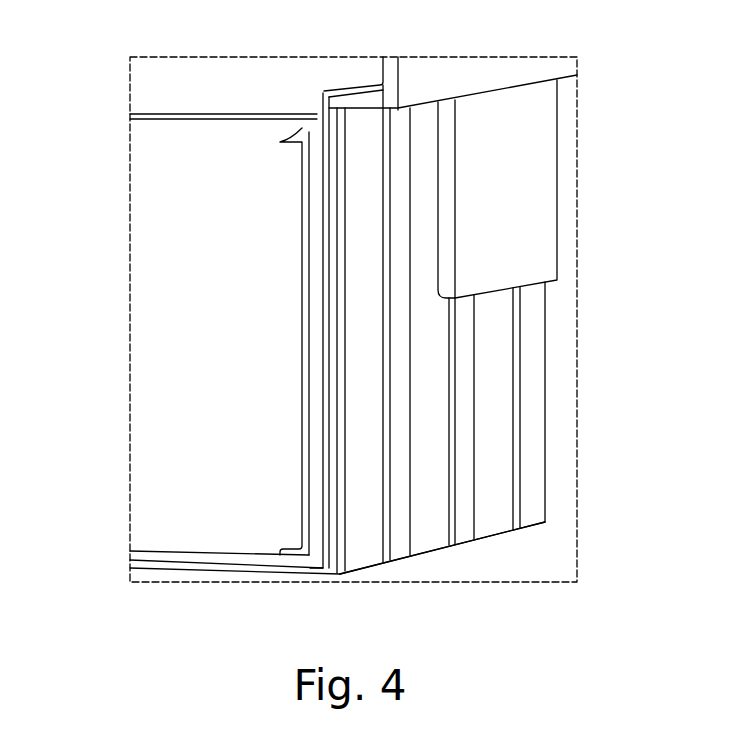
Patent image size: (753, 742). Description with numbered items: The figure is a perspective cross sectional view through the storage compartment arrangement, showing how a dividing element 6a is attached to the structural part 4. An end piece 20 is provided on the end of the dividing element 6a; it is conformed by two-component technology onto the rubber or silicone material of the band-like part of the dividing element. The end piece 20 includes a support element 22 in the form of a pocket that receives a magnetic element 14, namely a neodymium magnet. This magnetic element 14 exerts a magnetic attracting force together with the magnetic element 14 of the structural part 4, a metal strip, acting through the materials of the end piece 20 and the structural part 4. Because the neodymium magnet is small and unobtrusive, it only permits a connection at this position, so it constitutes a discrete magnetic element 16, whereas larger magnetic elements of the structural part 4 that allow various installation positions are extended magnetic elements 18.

The structural part 4 is at (163, 557).
The dividing element 6a is at (156, 227).
The magnetic element 14 is at (397, 363).
The discrete magnetic element 16 is at (462, 373).
The extended magnetic element 18 is at (278, 568).
The end piece 20 is at (318, 125).
The support element 22 is at (313, 153).